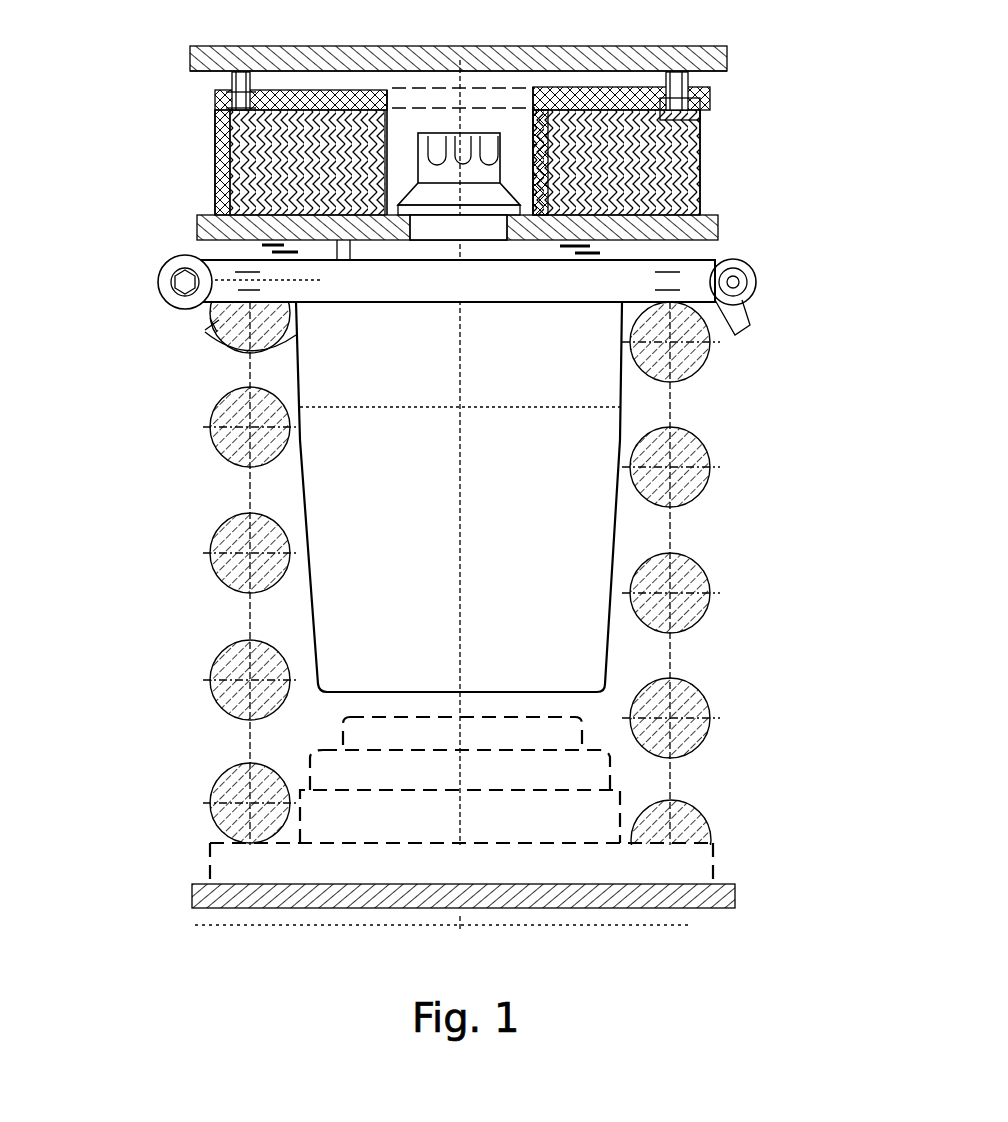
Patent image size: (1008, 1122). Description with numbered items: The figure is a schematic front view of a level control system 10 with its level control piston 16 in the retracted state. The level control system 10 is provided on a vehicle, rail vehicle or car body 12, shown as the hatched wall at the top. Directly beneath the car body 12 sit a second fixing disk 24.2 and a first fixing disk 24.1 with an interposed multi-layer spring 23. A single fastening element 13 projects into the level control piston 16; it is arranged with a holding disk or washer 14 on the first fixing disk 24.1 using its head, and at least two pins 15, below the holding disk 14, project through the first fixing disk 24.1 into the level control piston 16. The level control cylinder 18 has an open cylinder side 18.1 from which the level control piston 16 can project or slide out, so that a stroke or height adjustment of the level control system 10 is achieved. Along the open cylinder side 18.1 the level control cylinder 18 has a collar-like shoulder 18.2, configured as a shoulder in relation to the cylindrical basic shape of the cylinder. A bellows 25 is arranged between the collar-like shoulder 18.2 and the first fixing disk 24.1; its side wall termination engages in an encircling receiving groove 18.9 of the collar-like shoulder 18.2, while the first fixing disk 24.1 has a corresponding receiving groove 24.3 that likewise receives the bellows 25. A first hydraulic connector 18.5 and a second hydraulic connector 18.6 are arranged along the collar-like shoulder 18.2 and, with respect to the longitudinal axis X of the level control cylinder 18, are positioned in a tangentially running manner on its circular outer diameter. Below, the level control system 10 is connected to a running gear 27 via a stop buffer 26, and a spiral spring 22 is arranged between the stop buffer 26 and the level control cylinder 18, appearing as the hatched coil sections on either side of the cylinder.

The level control system 10 is at (195, 22).
The car body 12 is at (458, 43).
The fastening element 13 is at (505, 170).
The holding disk 14 is at (517, 197).
The pins 15 is at (690, 238).
The level control piston 16 is at (640, 250).
The level control cylinder 18 is at (617, 386).
The open cylinder side 18.1 is at (296, 303).
The collar-like shoulder 18.2 is at (275, 302).
The first hydraulic connector 18.5 is at (175, 268).
The second hydraulic connector 18.6 is at (756, 282).
The receiving groove 18.9 is at (200, 262).
The spiral spring 22 is at (218, 779).
The multi-layer spring 23 is at (712, 98).
The first fixing disk 24.1 is at (205, 222).
The second fixing disk 24.2 is at (235, 97).
The receiving groove 24.3 is at (200, 238).
The bellows 25 is at (245, 200).
The stop buffer 26 is at (592, 772).
The running gear 27 is at (663, 908).
The longitudinal axis X is at (458, 488).